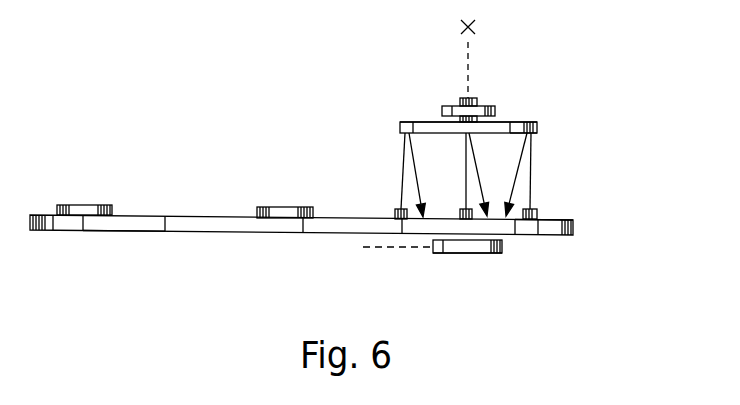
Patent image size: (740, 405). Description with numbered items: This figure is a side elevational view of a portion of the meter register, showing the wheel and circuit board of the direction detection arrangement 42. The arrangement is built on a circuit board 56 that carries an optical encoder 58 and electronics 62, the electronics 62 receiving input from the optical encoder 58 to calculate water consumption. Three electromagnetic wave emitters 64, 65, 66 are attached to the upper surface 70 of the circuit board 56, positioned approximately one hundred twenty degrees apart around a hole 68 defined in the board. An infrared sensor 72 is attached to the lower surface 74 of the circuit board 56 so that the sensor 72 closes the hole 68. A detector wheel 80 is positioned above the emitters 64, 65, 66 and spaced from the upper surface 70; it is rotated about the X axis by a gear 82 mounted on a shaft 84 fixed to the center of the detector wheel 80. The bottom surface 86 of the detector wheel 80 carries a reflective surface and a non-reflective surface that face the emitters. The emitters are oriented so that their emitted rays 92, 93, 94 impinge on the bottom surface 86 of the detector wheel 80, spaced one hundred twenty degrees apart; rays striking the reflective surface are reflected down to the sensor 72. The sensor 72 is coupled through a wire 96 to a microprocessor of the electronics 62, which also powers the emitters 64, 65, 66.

The direction detection arrangement 42 is at (571, 113).
The circuit board 56 is at (575, 232).
The optical encoder 58 is at (552, 50).
The electronics 62 is at (67, 205).
The electromagnetic wave emitter 64 is at (452, 209).
The electromagnetic wave emitter 65 is at (396, 212).
The electromagnetic wave emitter 66 is at (534, 212).
The hole 68 is at (458, 222).
The upper surface 70 is at (557, 220).
The infrared sensor 72 is at (480, 253).
The lower surface 74 is at (143, 232).
The detector wheel 80 is at (401, 125).
The gear 82 is at (442, 110).
The shaft 84 is at (476, 100).
The bottom surface 86 is at (538, 131).
The emitted ray 92 is at (491, 198).
The emitted ray 93 is at (533, 178).
The emitted ray 94 is at (404, 162).
The wire 96 is at (398, 247).